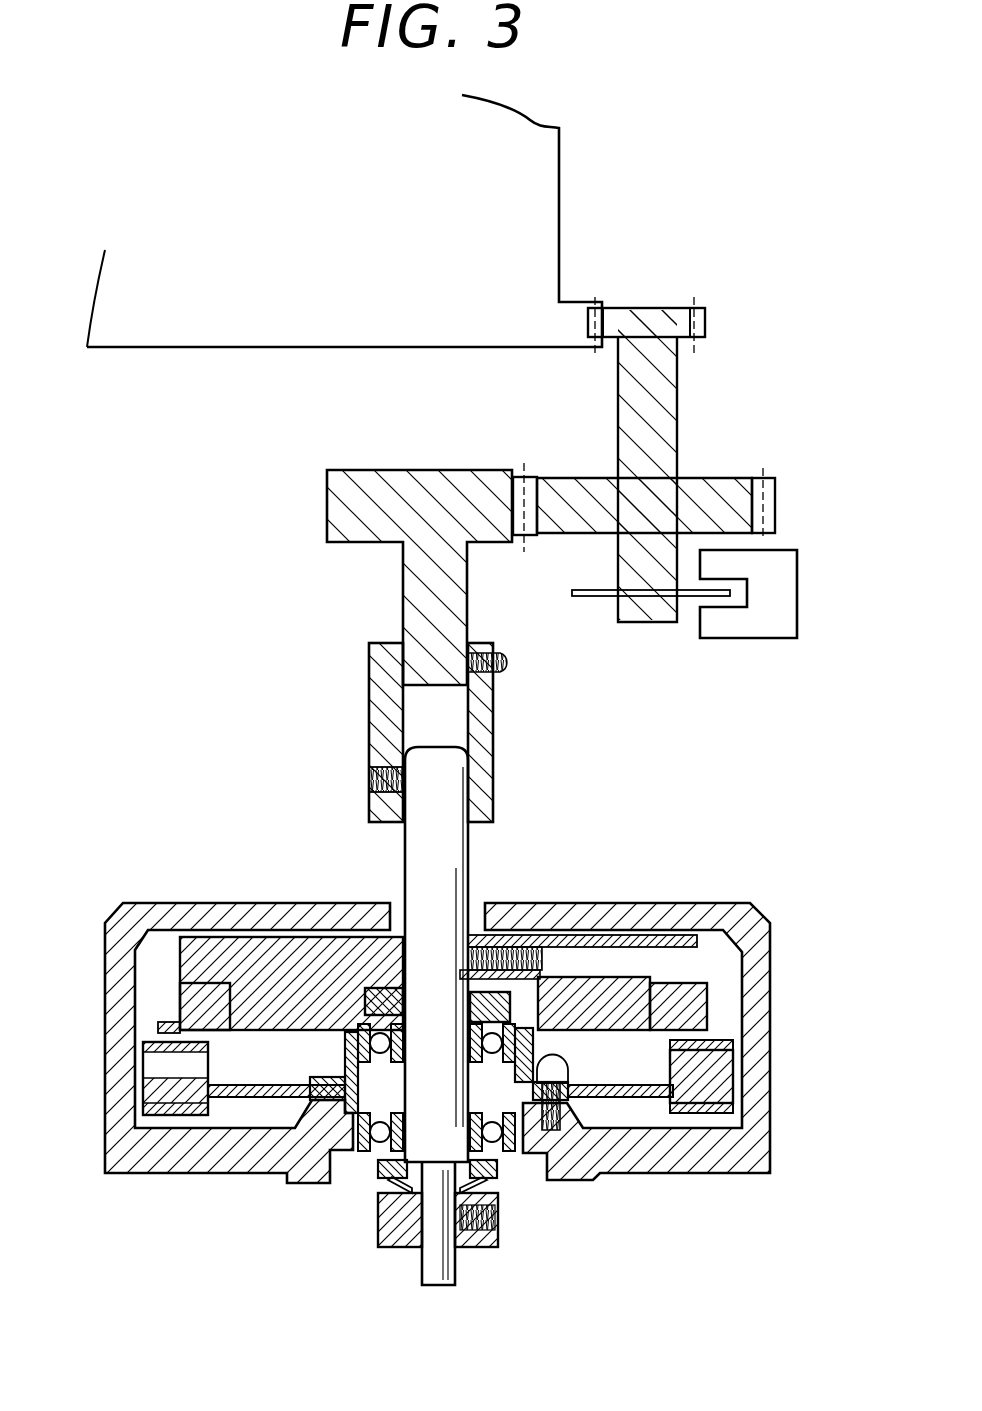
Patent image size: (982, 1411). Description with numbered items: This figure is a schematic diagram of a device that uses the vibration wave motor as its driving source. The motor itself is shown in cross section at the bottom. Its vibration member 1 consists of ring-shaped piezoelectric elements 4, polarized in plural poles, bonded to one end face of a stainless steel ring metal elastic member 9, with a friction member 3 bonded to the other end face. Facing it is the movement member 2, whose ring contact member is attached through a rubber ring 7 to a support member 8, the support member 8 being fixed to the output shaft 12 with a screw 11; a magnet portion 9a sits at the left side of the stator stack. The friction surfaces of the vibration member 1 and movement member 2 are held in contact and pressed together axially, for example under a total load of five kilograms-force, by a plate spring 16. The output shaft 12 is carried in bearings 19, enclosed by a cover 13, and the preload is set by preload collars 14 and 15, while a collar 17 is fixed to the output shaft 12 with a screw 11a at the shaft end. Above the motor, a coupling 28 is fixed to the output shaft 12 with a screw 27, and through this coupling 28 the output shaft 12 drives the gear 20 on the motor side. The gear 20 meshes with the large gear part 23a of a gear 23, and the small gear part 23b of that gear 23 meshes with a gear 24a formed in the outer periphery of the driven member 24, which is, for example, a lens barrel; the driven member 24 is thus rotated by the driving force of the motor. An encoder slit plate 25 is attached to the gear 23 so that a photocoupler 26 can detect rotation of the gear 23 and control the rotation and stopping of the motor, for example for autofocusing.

The vibration member 1 is at (539, 1076).
The movement member 2 is at (514, 970).
The friction member 3 is at (727, 1043).
The piezoelectric elements 4 is at (743, 1110).
The rubber ring 7 is at (627, 983).
The support member 8 is at (697, 953).
The metal elastic member 9 is at (723, 1078).
The magnet 9a is at (153, 1062).
The screw 11 is at (528, 980).
The screw 11a is at (478, 1250).
The output shaft 12 is at (453, 853).
The cover 13 is at (655, 910).
The preload collar 14 is at (383, 993).
The preload collar 15 is at (497, 1170).
The plate spring 16 is at (490, 1190).
The collar 17 is at (395, 1250).
The bearings 19 is at (358, 1028).
The gear 20 is at (418, 487).
The gear 23 is at (667, 377).
The large gear part 23a is at (760, 478).
The small gear part 23b is at (698, 307).
The driven member 24 is at (545, 148).
The gear 24a is at (593, 313).
The encoder slit plate 25 is at (587, 597).
The photocoupler 26 is at (770, 623).
The screw 27 is at (392, 763).
The coupling 28 is at (483, 722).